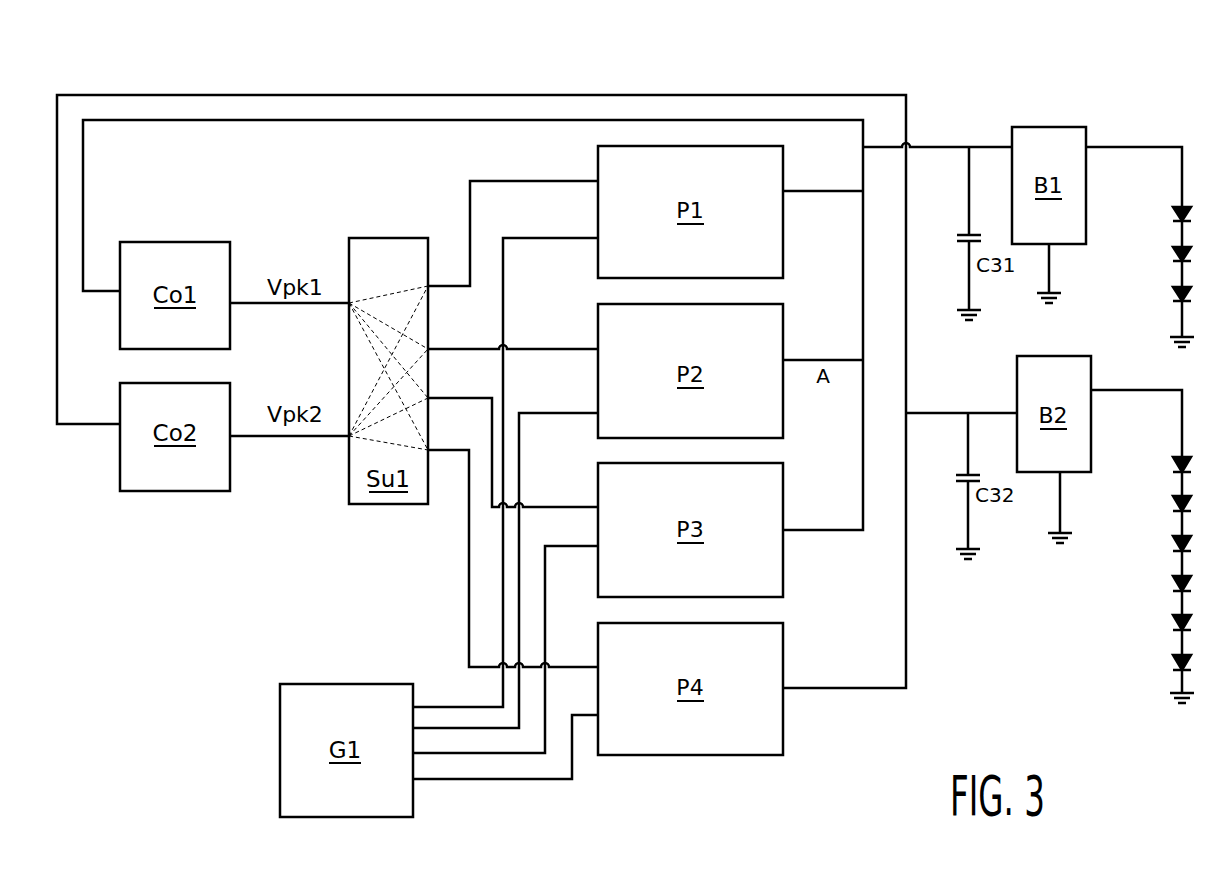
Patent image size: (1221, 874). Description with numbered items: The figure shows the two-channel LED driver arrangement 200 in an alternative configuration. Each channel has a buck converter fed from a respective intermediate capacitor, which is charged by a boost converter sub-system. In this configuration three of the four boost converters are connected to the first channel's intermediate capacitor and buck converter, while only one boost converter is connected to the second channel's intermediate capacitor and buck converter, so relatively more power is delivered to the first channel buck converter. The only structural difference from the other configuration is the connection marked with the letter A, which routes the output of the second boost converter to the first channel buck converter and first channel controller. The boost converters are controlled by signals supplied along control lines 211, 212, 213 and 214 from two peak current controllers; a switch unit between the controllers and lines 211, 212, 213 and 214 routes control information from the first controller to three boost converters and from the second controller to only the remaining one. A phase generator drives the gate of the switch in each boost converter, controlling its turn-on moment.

The LED driver arrangement 200 is at (898, 79).
The control signal line 211 is at (470, 210).
The control signal line 212 is at (546, 238).
The control signal line 213 is at (457, 399).
The control signal line 214 is at (469, 611).